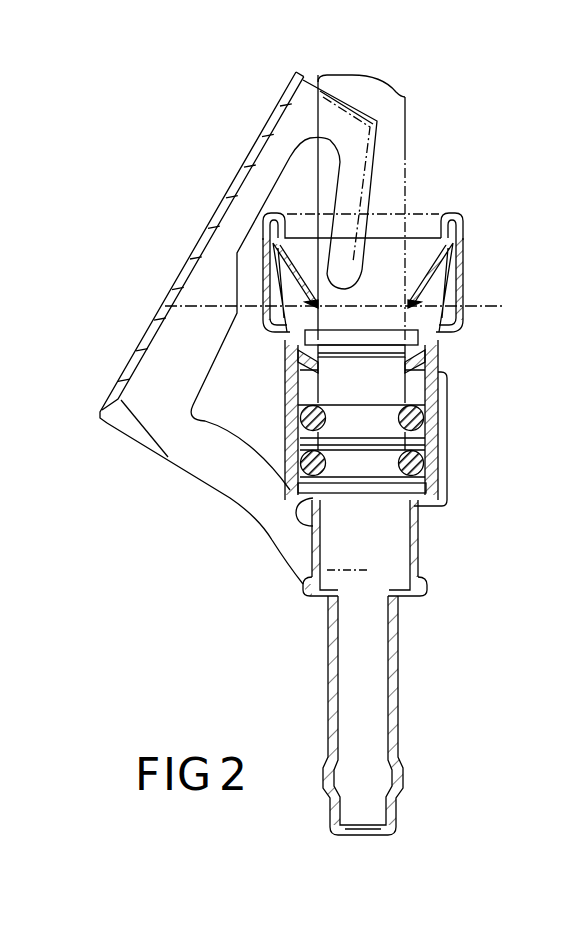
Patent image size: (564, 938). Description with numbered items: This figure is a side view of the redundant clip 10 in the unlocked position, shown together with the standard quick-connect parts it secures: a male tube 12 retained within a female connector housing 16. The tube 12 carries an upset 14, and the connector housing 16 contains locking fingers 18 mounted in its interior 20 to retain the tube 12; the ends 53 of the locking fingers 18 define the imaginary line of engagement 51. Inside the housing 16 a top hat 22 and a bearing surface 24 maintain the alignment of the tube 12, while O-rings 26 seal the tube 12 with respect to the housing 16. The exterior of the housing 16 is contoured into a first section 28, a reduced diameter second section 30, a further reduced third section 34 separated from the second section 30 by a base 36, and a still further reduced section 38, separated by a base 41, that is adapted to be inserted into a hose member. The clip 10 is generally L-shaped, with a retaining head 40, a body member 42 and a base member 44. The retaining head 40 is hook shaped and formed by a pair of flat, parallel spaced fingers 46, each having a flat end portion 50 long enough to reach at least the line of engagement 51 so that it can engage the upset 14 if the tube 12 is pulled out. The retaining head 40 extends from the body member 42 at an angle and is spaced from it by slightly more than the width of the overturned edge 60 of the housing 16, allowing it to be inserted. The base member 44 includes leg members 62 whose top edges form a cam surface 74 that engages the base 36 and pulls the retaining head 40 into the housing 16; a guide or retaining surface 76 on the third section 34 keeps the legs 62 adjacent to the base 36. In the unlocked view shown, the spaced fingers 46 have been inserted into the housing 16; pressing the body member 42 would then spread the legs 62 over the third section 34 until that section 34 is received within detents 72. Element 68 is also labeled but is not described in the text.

The redundant clip 10 is at (163, 185).
The tube 12 is at (420, 140).
The upset 14 is at (452, 349).
The connector housing 16 is at (477, 216).
The locking fingers 18 is at (449, 287).
The interior 20 is at (456, 314).
The top hat 22 is at (293, 393).
The bearing surface 24 is at (418, 583).
The O-rings 26 is at (427, 477).
The first section 28 is at (464, 250).
The reduced diameter second section 30 is at (288, 423).
The third section 34 is at (418, 538).
The base 36 is at (423, 508).
The still further reduced section 38 is at (400, 722).
The retaining head 40 is at (303, 61).
The base 41 is at (320, 594).
The body member 42 is at (158, 281).
The base member 44 is at (217, 503).
The spaced fingers 46 is at (353, 197).
The flat end portion 50 is at (340, 291).
The line of engagement 51 is at (162, 296).
The ends 53 is at (414, 304).
The overturned edge 60 is at (451, 214).
The leg members 62 is at (554, 92).
The element 68 is at (490, 0).
The detents 72 is at (515, 0).
The cam surface 74 is at (304, 524).
The guide or retaining surface 76 is at (422, 600).